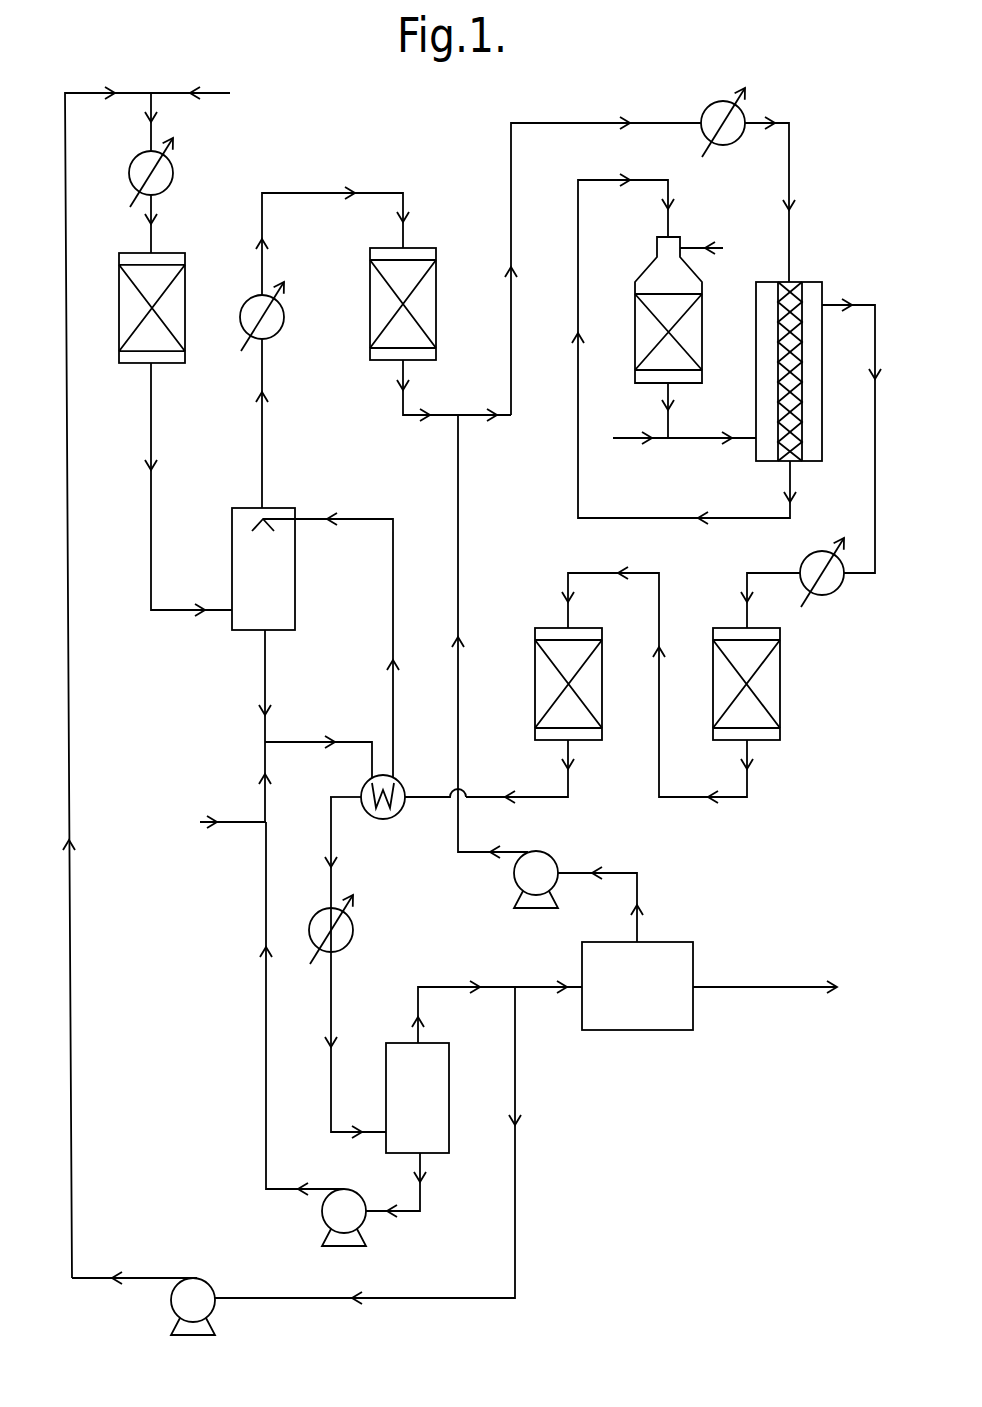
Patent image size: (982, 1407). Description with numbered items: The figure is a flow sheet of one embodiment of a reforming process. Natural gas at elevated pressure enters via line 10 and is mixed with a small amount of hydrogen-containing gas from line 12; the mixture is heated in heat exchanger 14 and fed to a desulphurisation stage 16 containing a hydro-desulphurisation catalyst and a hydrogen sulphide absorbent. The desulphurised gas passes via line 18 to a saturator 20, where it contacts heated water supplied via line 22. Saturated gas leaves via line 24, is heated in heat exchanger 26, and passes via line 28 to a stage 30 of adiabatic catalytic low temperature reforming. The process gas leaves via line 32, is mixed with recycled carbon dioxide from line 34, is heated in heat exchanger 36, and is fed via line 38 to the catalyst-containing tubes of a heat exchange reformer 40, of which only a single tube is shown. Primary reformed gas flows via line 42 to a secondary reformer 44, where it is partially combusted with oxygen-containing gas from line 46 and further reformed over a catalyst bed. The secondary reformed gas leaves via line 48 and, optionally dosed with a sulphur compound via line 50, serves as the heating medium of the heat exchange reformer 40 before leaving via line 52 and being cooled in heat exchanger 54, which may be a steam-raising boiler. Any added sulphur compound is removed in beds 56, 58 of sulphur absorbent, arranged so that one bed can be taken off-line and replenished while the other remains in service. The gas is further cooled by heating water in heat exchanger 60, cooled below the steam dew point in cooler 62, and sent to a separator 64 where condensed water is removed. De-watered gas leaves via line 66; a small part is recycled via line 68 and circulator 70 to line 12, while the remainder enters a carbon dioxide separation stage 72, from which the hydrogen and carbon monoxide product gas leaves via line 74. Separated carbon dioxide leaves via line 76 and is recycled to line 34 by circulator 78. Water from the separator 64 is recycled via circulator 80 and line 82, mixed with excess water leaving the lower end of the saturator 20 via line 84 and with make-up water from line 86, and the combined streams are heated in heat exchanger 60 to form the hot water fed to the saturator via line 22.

The line 10 is at (207, 95).
The line 12 is at (66, 222).
The heat exchanger 14 is at (173, 173).
The desulphurisation stage 16 is at (185, 355).
The line 18 is at (151, 513).
The saturator 20 is at (232, 563).
The line 22 is at (344, 517).
The line 24 is at (262, 452).
The heat exchanger 26 is at (284, 327).
The line 28 is at (313, 193).
The adiabatic catalytic low temperature reforming stage 30 is at (370, 280).
The line 32 is at (403, 378).
The line 34 is at (458, 490).
The heat exchanger 36 is at (703, 113).
The line 38 is at (789, 232).
The heat exchange reformer 40 is at (805, 282).
The line 42 is at (578, 240).
The secondary reformer 44 is at (635, 342).
The line 46 is at (693, 248).
The line 48 is at (720, 438).
The line 50 is at (625, 438).
The line 52 is at (875, 490).
The heat exchanger 54 is at (835, 592).
The bed 56 is at (780, 683).
The bed 58 is at (590, 740).
The heat exchanger 60 is at (390, 818).
The cooler 62 is at (353, 927).
The separator 64 is at (449, 1070).
The line 66 is at (435, 987).
The line 68 is at (515, 1180).
The circulator 70 is at (205, 1278).
The carbon dioxide separation stage 72 is at (643, 1030).
The line 74 is at (772, 987).
The line 76 is at (637, 915).
The circulator 78 is at (513, 884).
The circulator 80 is at (345, 1246).
The line 82 is at (266, 1100).
The line 84 is at (265, 667).
The line 86 is at (232, 821).